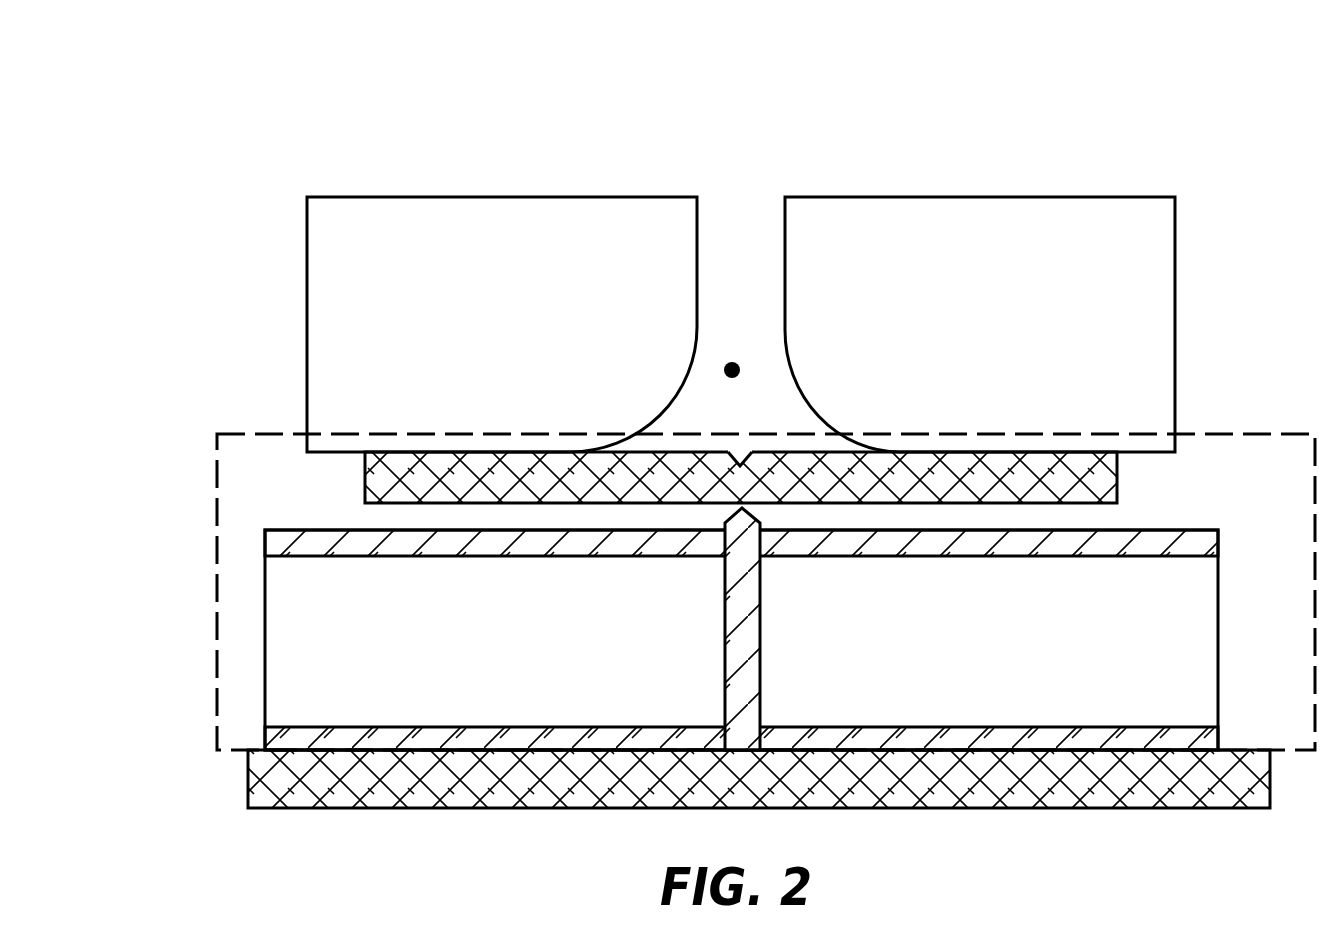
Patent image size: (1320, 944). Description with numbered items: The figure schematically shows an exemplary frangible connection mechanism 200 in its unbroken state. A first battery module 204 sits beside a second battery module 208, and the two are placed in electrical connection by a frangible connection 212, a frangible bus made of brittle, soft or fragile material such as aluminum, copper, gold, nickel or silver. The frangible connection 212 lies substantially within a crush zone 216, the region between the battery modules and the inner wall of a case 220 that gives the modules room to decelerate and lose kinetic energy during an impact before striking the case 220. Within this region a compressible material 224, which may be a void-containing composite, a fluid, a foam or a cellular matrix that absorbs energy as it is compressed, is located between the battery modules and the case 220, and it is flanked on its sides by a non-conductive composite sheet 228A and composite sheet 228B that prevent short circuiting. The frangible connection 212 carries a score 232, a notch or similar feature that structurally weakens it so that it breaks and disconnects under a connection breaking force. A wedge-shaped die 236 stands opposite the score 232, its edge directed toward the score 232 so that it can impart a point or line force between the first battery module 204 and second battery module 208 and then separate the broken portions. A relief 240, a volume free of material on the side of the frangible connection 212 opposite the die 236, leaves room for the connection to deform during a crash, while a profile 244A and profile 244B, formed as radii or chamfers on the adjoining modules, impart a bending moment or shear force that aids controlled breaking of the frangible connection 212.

The frangible connection mechanism 200 is at (358, 66).
The first battery module 204 is at (461, 297).
The second battery module 208 is at (980, 298).
The frangible connection 212 is at (741, 405).
The crush zone 216 is at (233, 430).
The case 220 is at (248, 750).
The compressible material 224 is at (684, 613).
The composite sheet 228A is at (344, 528).
The composite sheet 228B is at (476, 725).
The score 232 is at (760, 446).
The die 236 is at (720, 630).
The relief 240 is at (724, 364).
The profile 244A is at (663, 404).
The profile 244B is at (822, 404).